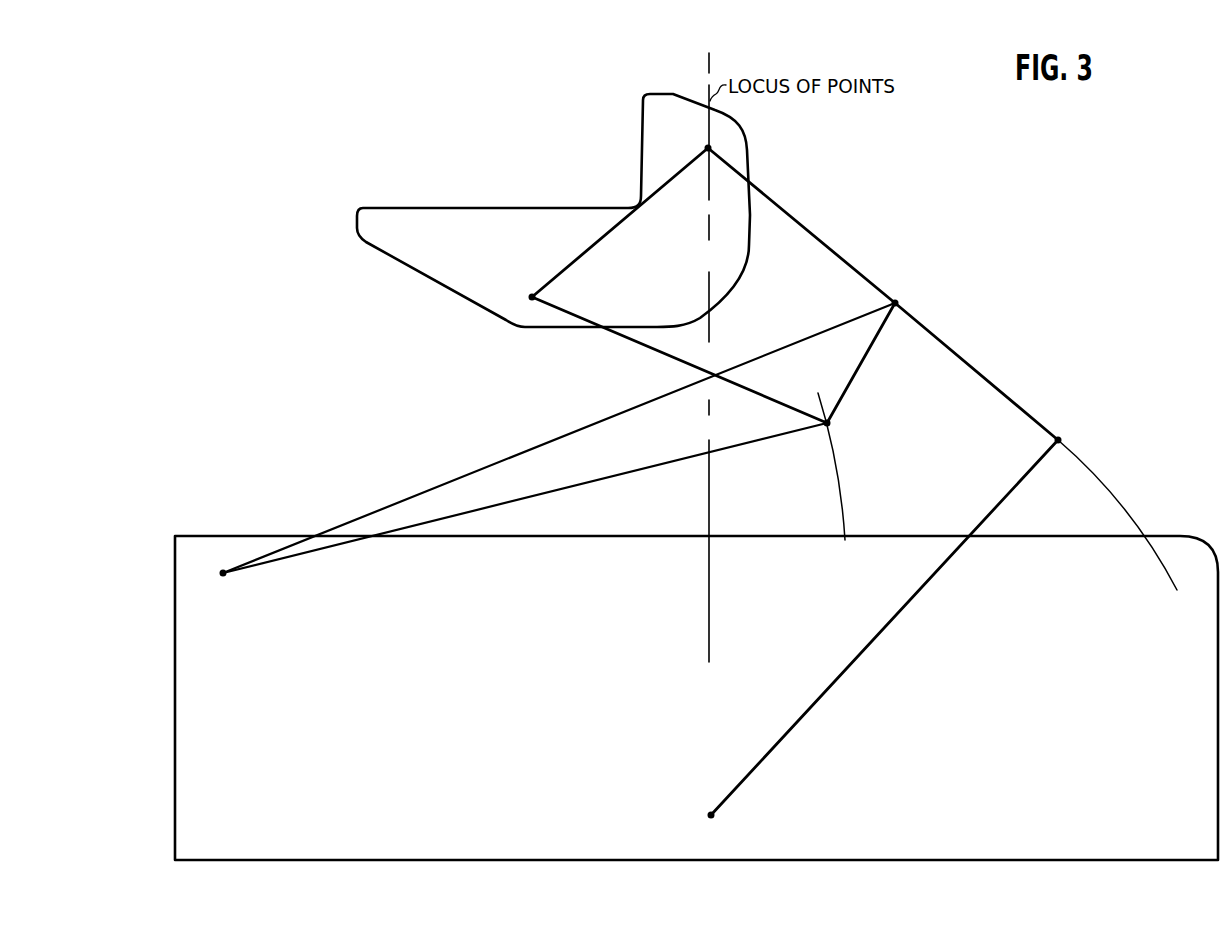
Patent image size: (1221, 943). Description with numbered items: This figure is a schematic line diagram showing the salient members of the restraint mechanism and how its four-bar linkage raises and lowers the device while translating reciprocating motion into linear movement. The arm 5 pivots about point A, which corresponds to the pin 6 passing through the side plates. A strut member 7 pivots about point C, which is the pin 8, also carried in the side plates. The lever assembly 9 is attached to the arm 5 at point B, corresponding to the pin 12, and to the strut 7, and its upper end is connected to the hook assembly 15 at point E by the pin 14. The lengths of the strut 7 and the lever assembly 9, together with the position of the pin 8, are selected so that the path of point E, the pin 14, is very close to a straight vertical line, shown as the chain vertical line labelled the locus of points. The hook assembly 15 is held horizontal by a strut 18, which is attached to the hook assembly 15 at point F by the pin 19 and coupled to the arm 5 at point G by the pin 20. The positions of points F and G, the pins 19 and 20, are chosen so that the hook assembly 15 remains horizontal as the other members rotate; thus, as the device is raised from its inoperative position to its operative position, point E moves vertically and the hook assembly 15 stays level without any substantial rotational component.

The arm 5 is at (472, 510).
The pin 6 is at (236, 588).
The strut member 7 is at (850, 668).
The pin 8 is at (734, 818).
The lever assembly 9 is at (983, 358).
The pin 12 is at (920, 296).
The pin 14 is at (685, 139).
The hook assembly 15 is at (462, 208).
The strut 18 is at (636, 342).
The pin 19 is at (513, 286).
The pin 20 is at (854, 420).